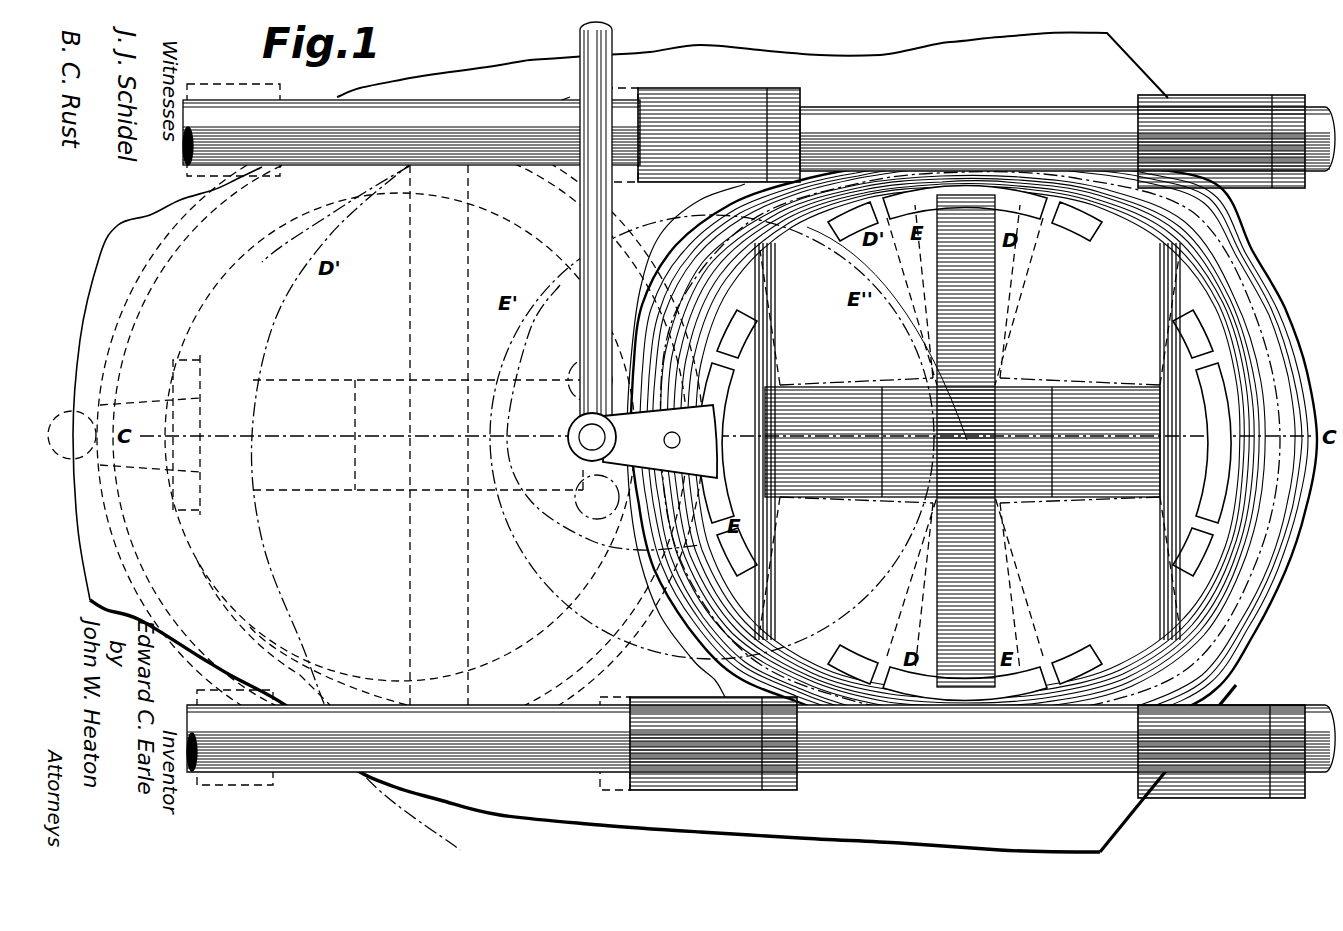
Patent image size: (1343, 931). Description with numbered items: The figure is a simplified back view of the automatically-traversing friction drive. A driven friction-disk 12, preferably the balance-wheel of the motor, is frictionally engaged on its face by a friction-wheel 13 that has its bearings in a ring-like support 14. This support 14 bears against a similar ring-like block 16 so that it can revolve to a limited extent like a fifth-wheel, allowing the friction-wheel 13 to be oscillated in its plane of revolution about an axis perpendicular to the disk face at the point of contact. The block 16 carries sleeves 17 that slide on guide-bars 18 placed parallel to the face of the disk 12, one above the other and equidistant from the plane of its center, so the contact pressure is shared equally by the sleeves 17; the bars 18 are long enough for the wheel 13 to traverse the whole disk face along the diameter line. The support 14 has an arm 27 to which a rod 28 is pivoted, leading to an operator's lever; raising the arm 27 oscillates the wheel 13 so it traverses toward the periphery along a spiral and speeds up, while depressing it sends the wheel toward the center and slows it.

The driven friction-disk 12 is at (561, 437).
The friction-wheel 13 is at (967, 441).
The ring-like support 14 is at (965, 442).
The ring-like support or block 16 is at (1243, 283).
The sleeves 17 is at (720, 88).
The guide-bars 18 is at (311, 108).
The arm 27 is at (590, 450).
The rod 28 is at (580, 231).